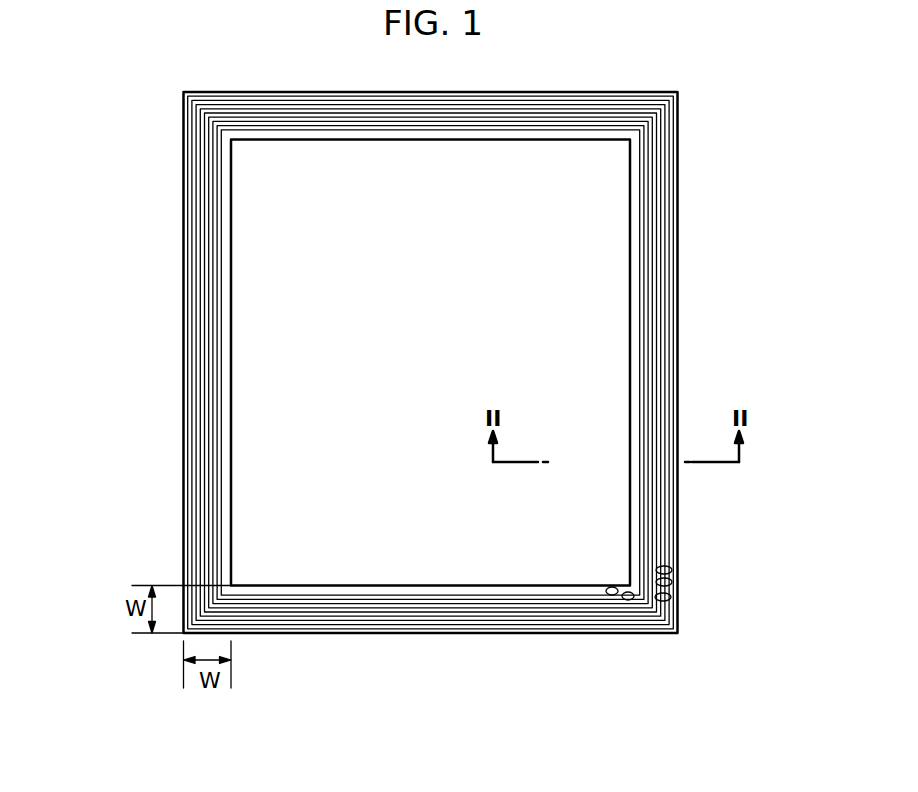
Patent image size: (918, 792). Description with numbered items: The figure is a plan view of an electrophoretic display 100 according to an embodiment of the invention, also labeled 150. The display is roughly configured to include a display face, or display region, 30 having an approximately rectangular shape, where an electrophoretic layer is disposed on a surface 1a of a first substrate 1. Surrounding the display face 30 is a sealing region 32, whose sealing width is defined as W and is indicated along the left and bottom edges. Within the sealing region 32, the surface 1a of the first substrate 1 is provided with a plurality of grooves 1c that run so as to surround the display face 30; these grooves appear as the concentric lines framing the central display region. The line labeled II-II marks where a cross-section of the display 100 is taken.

The electrophoretic display 100 is at (474, 388).
The antenna module 150 is at (646, 56).
The first substrate 1 is at (673, 203).
The surface of the first substrate 1a is at (612, 268).
The grooves 1c is at (672, 570).
The display face 30 is at (412, 562).
The sealing region 32 is at (516, 626).